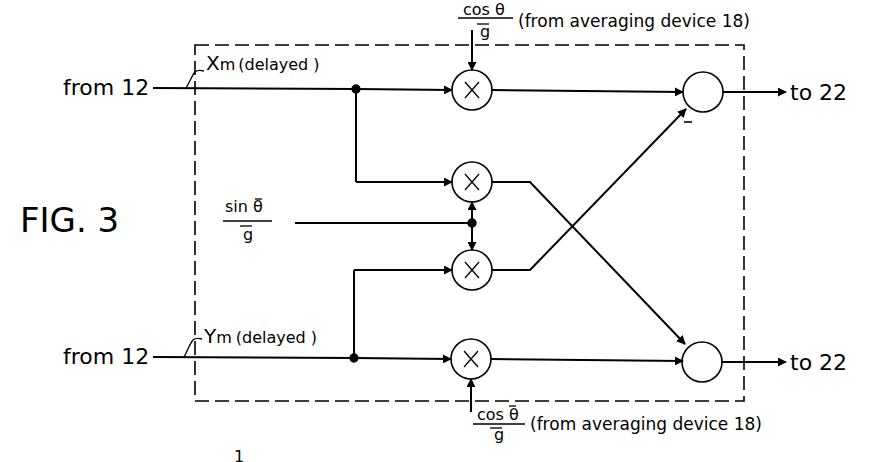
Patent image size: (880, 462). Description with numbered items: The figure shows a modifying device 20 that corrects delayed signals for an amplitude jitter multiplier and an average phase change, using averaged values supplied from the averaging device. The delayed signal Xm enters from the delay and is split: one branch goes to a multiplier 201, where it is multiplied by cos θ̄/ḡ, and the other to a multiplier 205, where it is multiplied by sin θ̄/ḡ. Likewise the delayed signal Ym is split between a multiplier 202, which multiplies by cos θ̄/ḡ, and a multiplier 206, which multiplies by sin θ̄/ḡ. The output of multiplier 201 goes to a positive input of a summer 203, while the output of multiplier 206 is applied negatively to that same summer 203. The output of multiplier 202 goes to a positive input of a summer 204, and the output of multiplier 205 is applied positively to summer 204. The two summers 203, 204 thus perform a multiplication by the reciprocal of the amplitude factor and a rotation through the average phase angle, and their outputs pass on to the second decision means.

The modifying device 20 is at (744, 220).
The multiplier 201 is at (456, 72).
The multiplier 202 is at (458, 343).
The summer 203 is at (703, 72).
The summer 204 is at (697, 381).
The multiplier 205 is at (487, 168).
The multiplier 206 is at (487, 284).